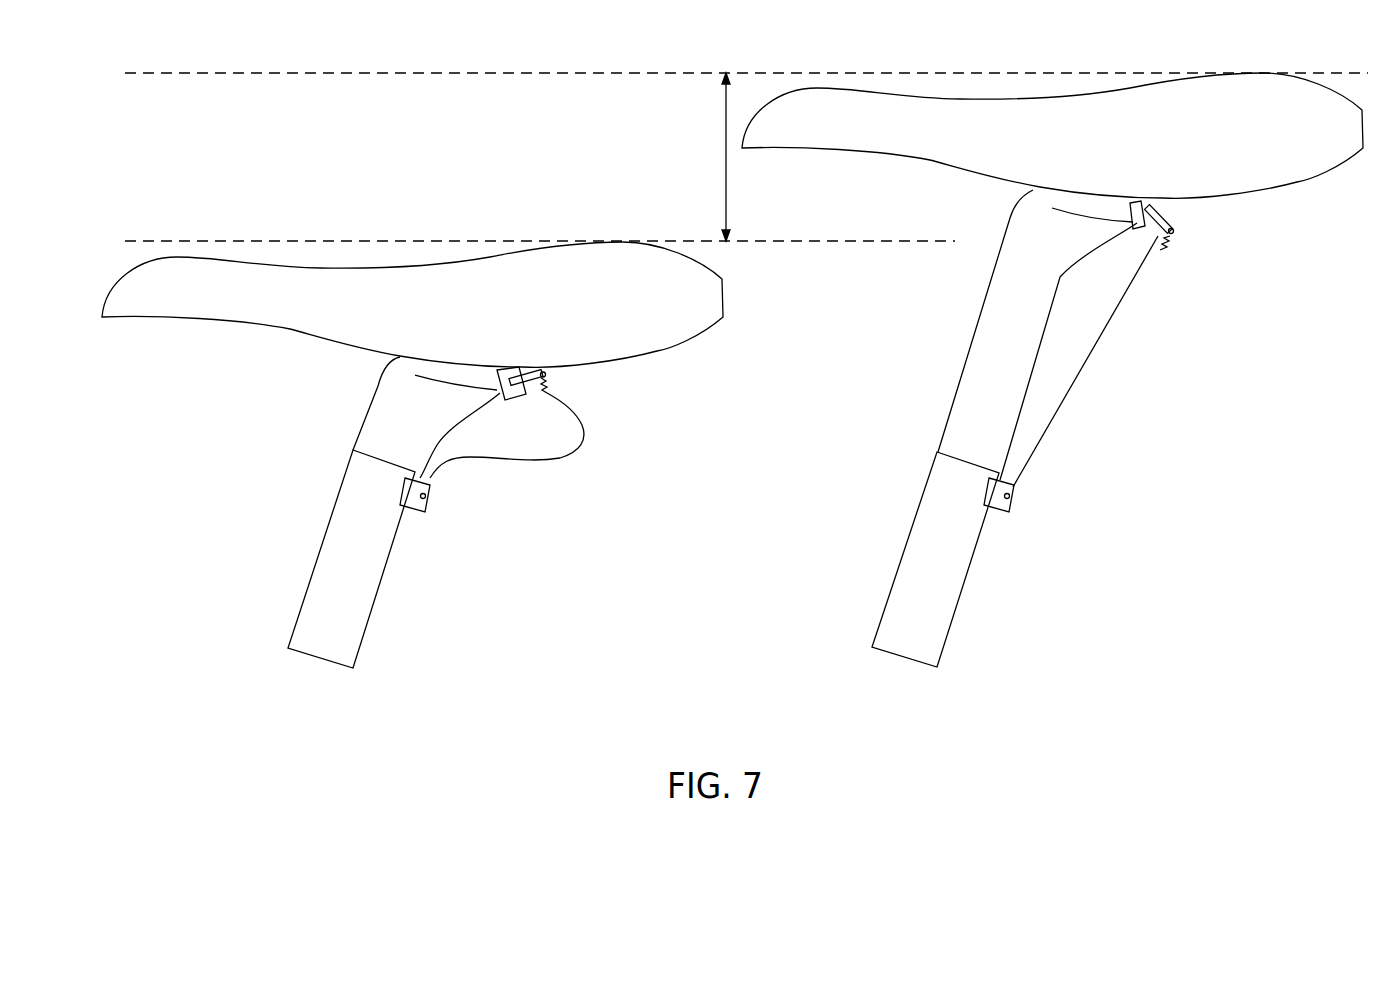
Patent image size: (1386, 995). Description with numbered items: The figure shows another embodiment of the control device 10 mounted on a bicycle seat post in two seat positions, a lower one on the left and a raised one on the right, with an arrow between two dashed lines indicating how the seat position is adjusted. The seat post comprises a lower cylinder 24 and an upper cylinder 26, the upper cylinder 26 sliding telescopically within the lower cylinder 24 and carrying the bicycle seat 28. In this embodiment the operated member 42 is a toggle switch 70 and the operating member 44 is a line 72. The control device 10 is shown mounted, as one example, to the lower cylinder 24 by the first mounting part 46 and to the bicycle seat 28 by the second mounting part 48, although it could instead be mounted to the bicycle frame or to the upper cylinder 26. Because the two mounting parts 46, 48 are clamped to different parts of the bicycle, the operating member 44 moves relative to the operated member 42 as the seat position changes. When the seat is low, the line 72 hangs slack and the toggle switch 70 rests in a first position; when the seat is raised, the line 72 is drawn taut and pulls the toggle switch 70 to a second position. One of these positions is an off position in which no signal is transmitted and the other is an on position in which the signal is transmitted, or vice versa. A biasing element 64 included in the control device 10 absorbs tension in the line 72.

The control device 10 is at (590, 502).
The lower cylinder 24 is at (330, 519).
The upper cylinder 26 is at (378, 390).
The bicycle seat 28 is at (727, 316).
The operated member 42 is at (521, 406).
The operating member 44 is at (600, 443).
The first mounting part 46 is at (430, 508).
The second mounting part 48 is at (500, 403).
The biasing element 64 is at (552, 391).
The toggle switch 70 is at (526, 400).
The line 72 is at (588, 453).